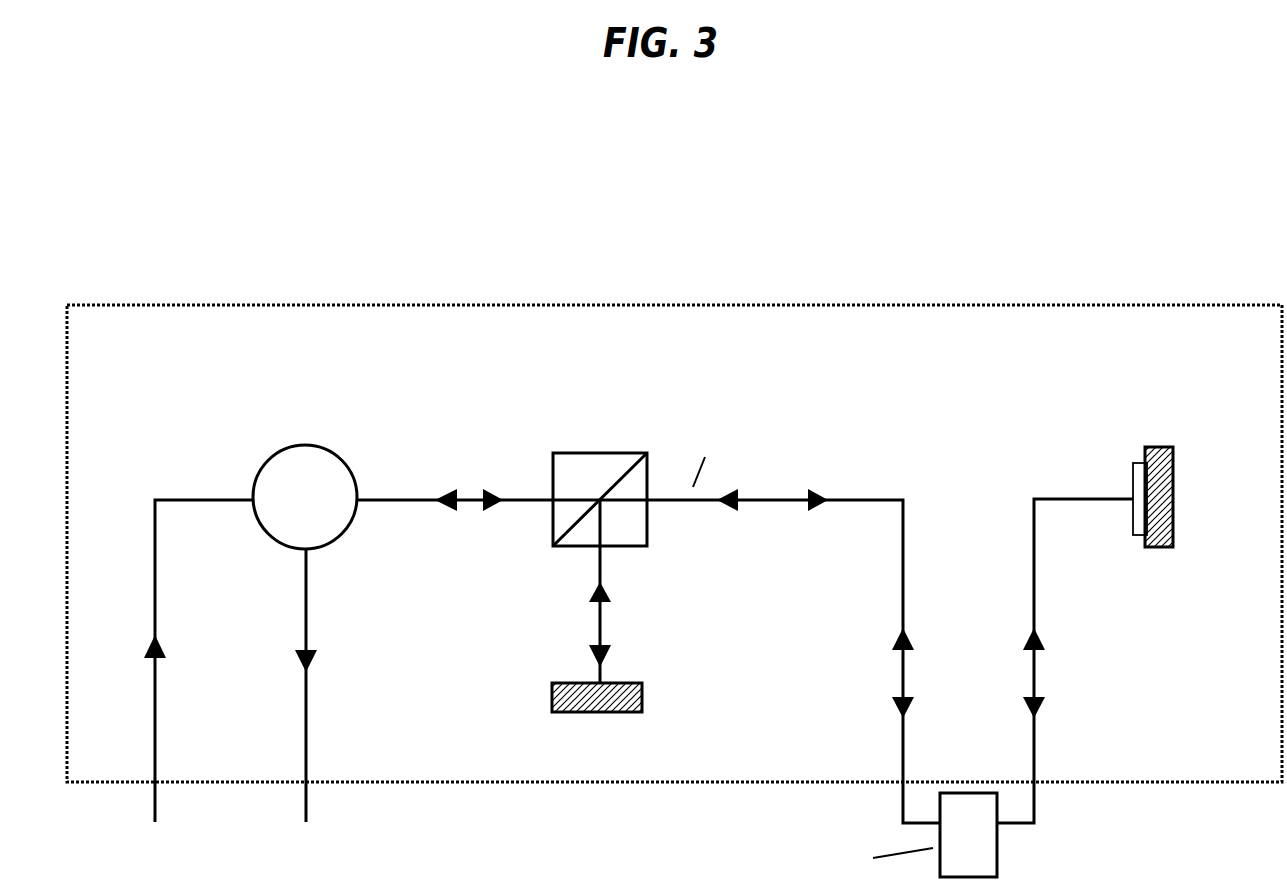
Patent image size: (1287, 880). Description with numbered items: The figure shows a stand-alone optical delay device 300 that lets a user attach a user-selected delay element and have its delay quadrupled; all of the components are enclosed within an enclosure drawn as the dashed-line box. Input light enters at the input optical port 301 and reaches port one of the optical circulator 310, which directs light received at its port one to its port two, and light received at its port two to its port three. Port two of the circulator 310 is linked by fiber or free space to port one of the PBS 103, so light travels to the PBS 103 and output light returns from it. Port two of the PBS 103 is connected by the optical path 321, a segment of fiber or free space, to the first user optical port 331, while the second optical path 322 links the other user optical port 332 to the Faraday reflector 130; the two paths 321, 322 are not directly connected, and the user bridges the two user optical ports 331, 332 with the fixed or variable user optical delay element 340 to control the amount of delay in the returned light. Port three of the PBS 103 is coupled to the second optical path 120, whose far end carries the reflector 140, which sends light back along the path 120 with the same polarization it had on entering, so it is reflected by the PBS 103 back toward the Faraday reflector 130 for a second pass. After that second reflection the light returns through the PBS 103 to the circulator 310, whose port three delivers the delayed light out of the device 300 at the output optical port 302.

The optical delay device 300 is at (260, 318).
The optical circulator 310 is at (322, 457).
The input optical port 301 is at (155, 782).
The output optical port 302 is at (300, 782).
The PBS 103 is at (514, 480).
The second optical path 120 is at (617, 593).
The reflector 140 is at (547, 670).
The optical path 321 is at (903, 527).
The optical path 322 is at (1033, 528).
The first user optical port 331 is at (903, 782).
The user optical port 332 is at (1034, 782).
The Faraday reflector 130 is at (1173, 438).
The user optical delay element 340 is at (990, 852).